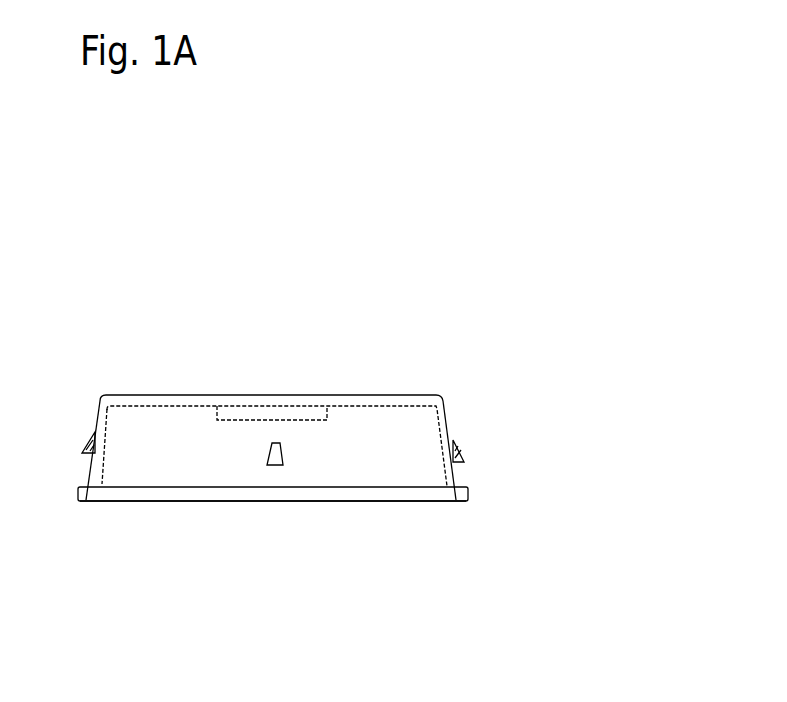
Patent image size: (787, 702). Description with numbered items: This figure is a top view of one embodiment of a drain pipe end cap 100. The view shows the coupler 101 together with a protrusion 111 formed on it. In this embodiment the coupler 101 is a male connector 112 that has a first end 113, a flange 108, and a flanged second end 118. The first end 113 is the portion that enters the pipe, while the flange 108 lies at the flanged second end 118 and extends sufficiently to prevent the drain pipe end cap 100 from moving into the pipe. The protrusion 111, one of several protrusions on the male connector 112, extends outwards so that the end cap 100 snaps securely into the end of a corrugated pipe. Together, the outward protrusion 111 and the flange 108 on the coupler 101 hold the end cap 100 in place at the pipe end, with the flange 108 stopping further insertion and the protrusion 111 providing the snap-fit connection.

The drain pipe end cap 100 is at (406, 380).
The coupler 101 is at (423, 330).
The flange 108 is at (273, 543).
The protrusion 111 is at (88, 436).
The male connector 112 is at (403, 434).
The first end 113 is at (183, 392).
The flanged second end 118 is at (173, 508).